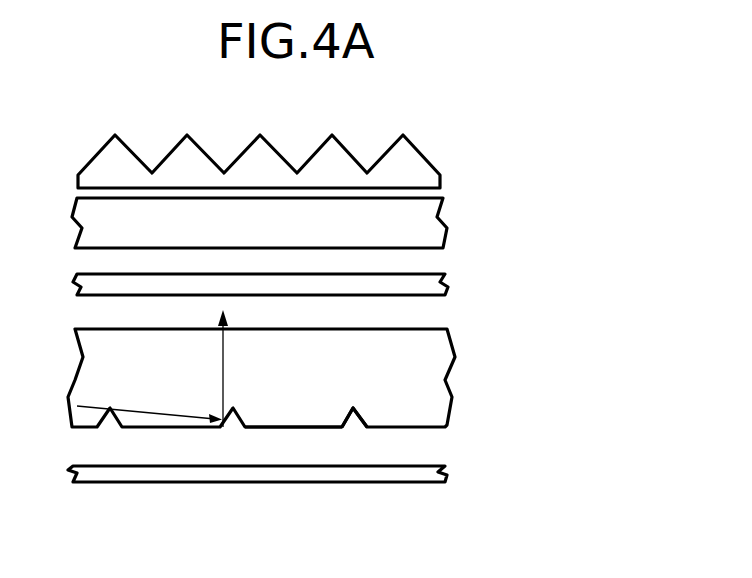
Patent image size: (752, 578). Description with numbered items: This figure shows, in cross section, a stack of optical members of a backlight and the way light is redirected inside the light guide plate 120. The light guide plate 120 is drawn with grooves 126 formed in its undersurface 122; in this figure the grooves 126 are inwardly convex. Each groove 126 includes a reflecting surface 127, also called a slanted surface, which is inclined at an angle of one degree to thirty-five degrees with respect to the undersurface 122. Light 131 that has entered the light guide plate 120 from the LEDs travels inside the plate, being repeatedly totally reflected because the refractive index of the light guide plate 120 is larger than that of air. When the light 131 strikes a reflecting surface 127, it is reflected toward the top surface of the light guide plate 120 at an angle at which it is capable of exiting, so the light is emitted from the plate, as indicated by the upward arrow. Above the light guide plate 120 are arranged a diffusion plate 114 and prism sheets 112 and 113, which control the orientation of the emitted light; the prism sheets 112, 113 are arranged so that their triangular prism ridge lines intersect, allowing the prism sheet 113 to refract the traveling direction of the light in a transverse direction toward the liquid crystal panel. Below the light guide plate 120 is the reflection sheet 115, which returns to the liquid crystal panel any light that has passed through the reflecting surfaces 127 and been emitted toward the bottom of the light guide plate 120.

The prism sheet 112 is at (443, 174).
The prism sheet 113 is at (443, 230).
The diffusion plate 114 is at (448, 283).
The light guide plate 120 is at (437, 375).
The reflection sheet 115 is at (447, 475).
The light 131 is at (165, 417).
The reflecting surface 127 is at (220, 427).
The undersurface 122 is at (297, 428).
The groove 126 is at (355, 428).